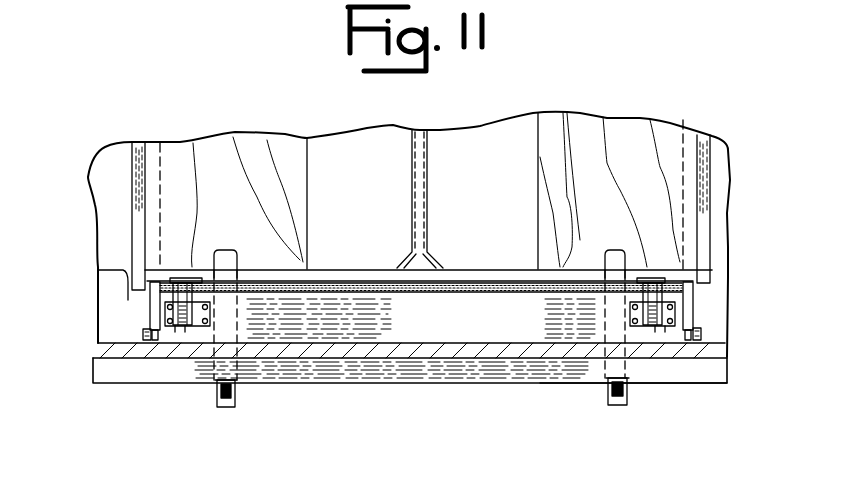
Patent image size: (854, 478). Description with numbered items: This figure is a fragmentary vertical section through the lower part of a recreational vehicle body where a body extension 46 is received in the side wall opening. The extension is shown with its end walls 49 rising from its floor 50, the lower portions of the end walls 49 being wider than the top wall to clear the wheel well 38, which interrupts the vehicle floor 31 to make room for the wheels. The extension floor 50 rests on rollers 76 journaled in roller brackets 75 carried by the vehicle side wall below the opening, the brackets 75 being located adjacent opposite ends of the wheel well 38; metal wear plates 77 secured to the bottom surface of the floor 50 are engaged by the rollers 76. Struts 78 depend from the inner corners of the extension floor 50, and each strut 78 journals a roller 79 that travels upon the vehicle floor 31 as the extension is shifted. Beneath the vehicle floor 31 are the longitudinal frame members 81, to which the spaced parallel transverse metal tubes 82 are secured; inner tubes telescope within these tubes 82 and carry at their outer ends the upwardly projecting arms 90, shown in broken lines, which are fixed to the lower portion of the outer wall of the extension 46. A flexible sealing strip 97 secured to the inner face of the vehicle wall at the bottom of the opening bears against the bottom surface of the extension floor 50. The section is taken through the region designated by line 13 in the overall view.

The side panel 13 is at (123, 270).
The floor 31 is at (347, 350).
The wheel well 38 is at (454, 325).
The body extension 46 is at (497, 143).
The end wall 49 is at (138, 148).
The floor 50 is at (485, 277).
The roller bracket 75 is at (175, 328).
The roller 76 is at (187, 328).
The wear plate 77 is at (195, 233).
The strut 78 is at (150, 302).
The roller 79 is at (143, 333).
The longitudinal frame member 81 is at (558, 372).
The transverse metal tube 82 is at (235, 392).
The arm 90 is at (222, 254).
The sealing strip 97 is at (477, 288).